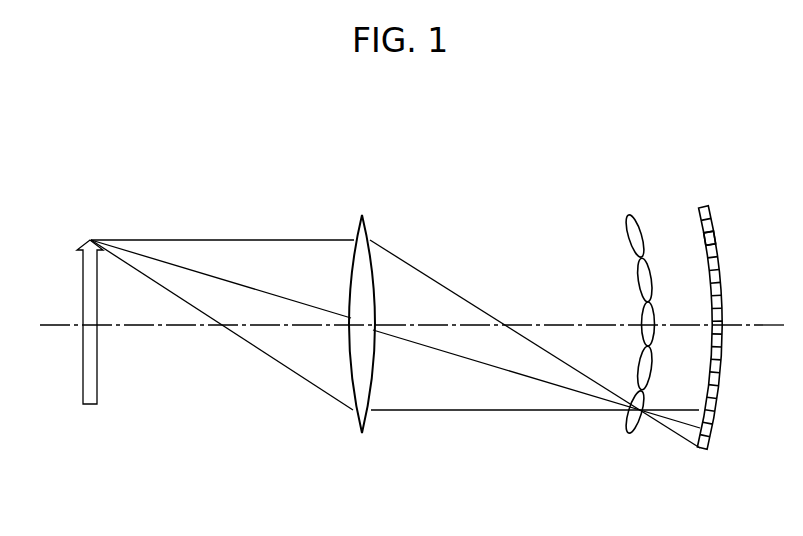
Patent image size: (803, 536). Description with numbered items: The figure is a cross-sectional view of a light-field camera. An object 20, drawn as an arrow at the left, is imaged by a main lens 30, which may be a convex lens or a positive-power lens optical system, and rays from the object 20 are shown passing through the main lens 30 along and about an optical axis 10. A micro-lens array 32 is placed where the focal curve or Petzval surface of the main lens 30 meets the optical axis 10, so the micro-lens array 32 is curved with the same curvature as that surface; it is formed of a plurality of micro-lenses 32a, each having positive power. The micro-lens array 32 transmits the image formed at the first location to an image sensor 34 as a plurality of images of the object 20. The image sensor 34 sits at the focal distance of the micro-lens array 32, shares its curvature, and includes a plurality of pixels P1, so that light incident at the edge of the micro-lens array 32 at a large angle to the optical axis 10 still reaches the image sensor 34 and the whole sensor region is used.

The optical axis 10 is at (57, 325).
The object 20 is at (88, 405).
The main lens 30 is at (362, 436).
The micro-lens array 32 is at (615, 287).
The micro-lens 32a is at (637, 237).
The image sensor 34 is at (734, 290).
The pixel P1 is at (711, 236).